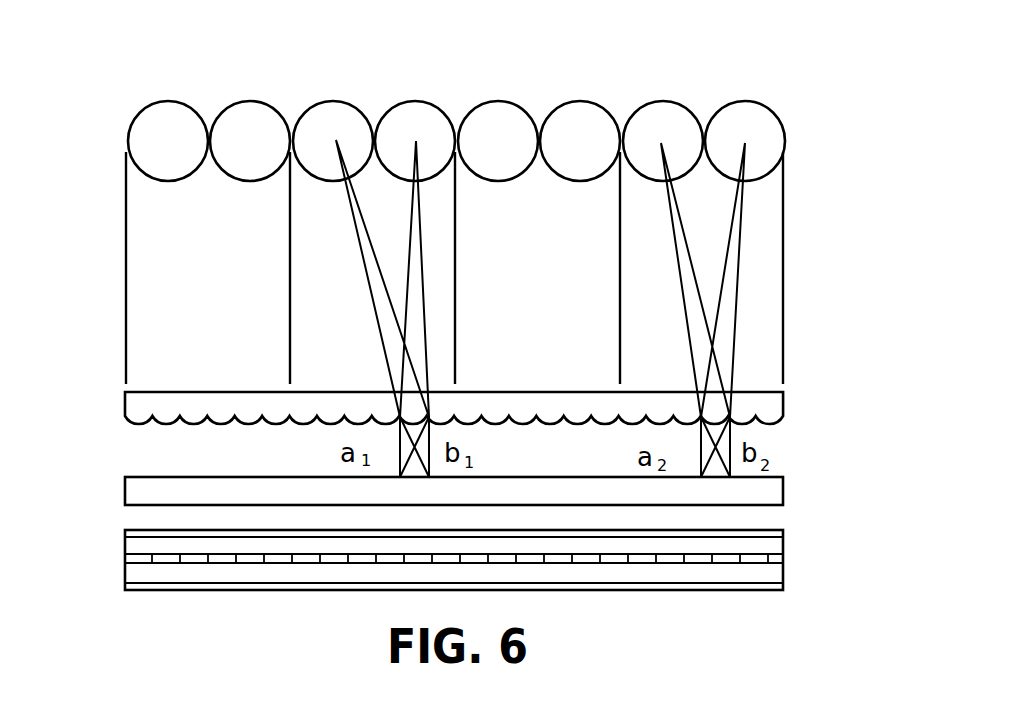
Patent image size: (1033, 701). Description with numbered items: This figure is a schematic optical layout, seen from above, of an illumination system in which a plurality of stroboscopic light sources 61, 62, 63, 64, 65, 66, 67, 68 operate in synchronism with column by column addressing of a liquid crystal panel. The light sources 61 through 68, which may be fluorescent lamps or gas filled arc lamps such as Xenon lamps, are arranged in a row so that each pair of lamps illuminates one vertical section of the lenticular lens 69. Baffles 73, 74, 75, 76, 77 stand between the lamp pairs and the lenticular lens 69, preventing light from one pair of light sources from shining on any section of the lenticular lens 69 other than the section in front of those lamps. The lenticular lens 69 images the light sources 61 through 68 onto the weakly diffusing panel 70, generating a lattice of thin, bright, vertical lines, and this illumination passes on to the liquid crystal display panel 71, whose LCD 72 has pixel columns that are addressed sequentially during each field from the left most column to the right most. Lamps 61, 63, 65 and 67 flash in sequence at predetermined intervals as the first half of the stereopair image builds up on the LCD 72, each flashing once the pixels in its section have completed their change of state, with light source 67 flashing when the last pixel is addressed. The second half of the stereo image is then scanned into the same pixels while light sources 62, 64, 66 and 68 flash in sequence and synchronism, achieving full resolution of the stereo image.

The light source 61 is at (172, 100).
The light source 62 is at (253, 98).
The light source 63 is at (340, 100).
The light source 64 is at (423, 100).
The light source 65 is at (500, 100).
The light source 66 is at (583, 102).
The light source 67 is at (668, 102).
The light source 68 is at (748, 102).
The lenticular lens 69 is at (784, 412).
The weakly diffusing panel 70 is at (784, 498).
The liquid crystal display panel 71 is at (459, 560).
The LCD 72 is at (125, 563).
The baffle 73 is at (126, 268).
The baffle 74 is at (290, 272).
The baffle 75 is at (456, 292).
The baffle 76 is at (619, 291).
The baffle 77 is at (785, 299).